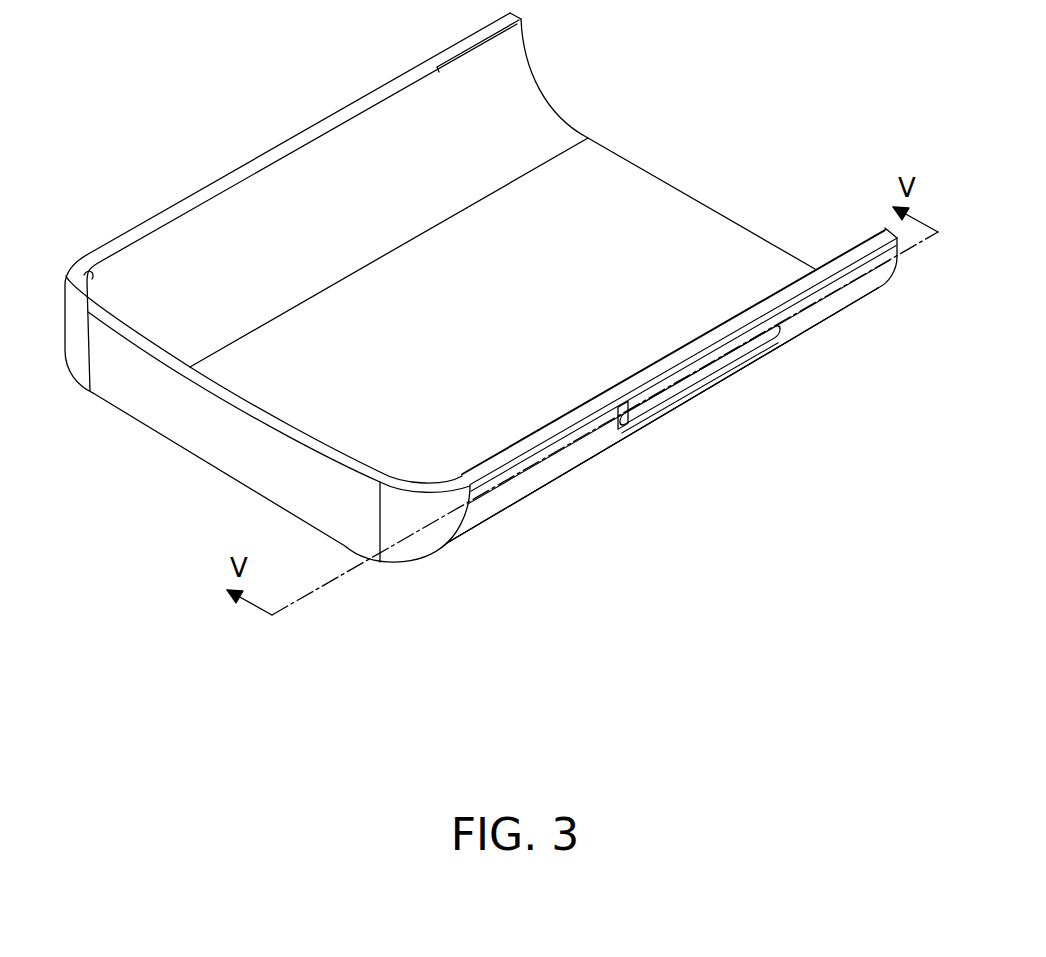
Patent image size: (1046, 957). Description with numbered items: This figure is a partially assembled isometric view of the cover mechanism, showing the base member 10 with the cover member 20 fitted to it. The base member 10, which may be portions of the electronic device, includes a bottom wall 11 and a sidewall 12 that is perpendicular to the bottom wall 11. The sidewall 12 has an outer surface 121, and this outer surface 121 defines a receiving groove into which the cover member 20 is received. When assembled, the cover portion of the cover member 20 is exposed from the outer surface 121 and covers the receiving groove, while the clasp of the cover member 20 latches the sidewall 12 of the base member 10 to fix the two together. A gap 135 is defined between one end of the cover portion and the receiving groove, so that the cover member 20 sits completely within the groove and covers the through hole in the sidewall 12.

The base member 10 is at (873, 138).
The bottom wall 11 is at (713, 243).
The sidewall 12 is at (852, 257).
The outer surface 121 is at (580, 453).
The gap 135 is at (633, 422).
The cover member 20 is at (735, 353).